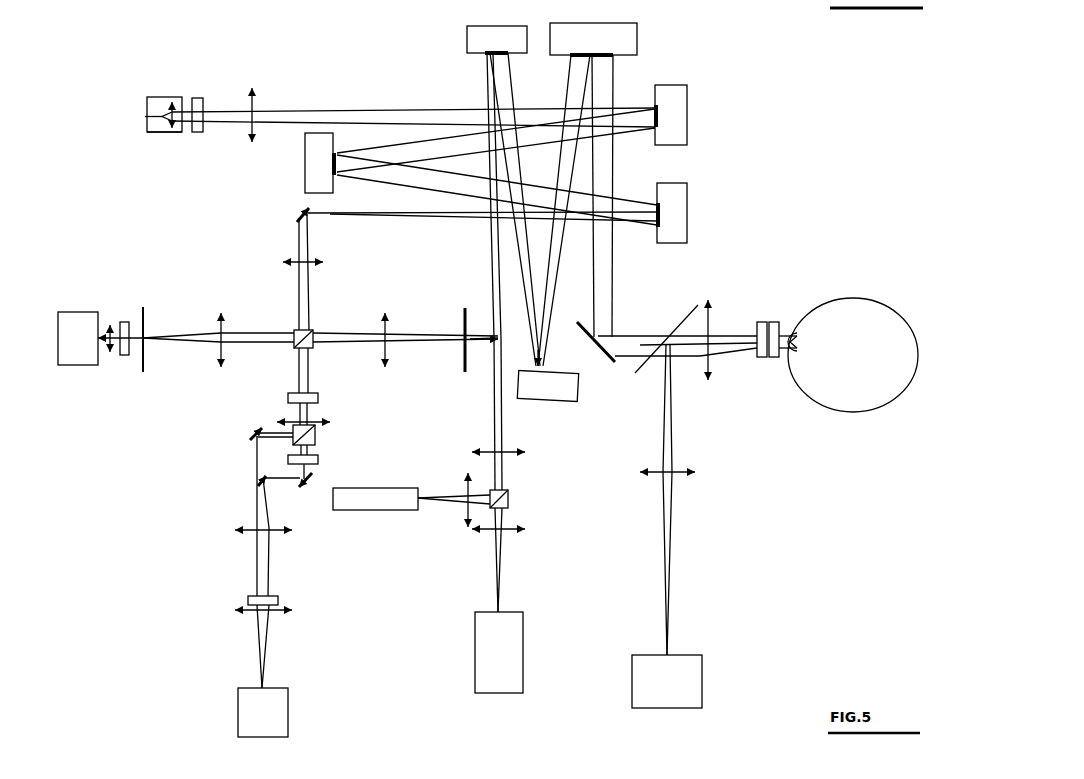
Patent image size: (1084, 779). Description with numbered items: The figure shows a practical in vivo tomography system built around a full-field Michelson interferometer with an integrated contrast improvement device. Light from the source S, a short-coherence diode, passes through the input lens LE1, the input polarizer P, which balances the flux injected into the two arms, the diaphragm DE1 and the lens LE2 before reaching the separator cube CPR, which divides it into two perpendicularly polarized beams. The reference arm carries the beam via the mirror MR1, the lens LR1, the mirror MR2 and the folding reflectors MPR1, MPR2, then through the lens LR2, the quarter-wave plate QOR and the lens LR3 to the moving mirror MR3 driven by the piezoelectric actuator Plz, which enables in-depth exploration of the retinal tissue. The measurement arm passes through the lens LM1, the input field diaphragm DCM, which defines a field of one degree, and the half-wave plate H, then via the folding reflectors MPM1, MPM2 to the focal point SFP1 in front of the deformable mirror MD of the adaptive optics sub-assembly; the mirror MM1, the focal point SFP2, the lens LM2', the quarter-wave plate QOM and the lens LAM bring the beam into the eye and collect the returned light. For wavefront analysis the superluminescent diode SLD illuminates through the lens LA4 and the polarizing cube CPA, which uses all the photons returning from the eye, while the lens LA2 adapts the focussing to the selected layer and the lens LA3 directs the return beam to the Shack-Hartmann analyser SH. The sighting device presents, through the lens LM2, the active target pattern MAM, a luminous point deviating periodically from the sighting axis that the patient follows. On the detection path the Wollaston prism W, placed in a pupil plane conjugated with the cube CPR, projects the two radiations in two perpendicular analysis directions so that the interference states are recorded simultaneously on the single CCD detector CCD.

The folding reflector of the measurement arm MPM1 is at (472, 39).
The folding reflector of the measurement arm MPM2 is at (618, 39).
The folding reflector of the reference arm MPR1 is at (696, 213).
The folding reflector of the reference arm MPR2 is at (695, 115).
The reference mirror MR1 is at (281, 210).
The reference mirror MR2 is at (299, 163).
The reference mirror MR3 is at (148, 125).
The piezoelectric actuator Plz is at (150, 126).
The reference arm lens LR1 is at (283, 263).
The reference arm lens LR2 is at (249, 104).
The reference arm lens LR3 is at (171, 128).
The quarter-wave plate of the reference arm QOR is at (198, 104).
The light source S is at (78, 338).
The input lens LE1 is at (113, 326).
The input polarizer P is at (124, 351).
The input diaphragm DE1 is at (146, 330).
The input lens LE2 is at (219, 330).
The polarizing separator cube CPR is at (321, 329).
The measurement arm lens LM1 is at (385, 350).
The input field diaphragm DCM is at (461, 328).
The half-wave plate H is at (484, 356).
The focal point SFP1 is at (520, 360).
The deformable mirror MD is at (547, 396).
The measurement arm mirror MM1 is at (590, 344).
The focal point SFP2 is at (666, 339).
The measurement arm lens LM2' is at (709, 331).
The eye-side lens LAM is at (778, 329).
The quarter-wave plate of the measurement arm QOM is at (757, 351).
The superluminescent diode SLD is at (375, 499).
The Wollaston prism W is at (277, 599).
The CCD detector CCD is at (263, 712).
The analysis path lens LA2 is at (515, 453).
The analysis path lens LA4 is at (468, 494).
The polarizing cube CPA is at (517, 497).
The analysis path lens LA3 is at (515, 531).
The Shack-Hartmann analyser SH is at (499, 652).
The sighting path lens LM2 is at (686, 473).
The active target pattern MAM is at (667, 681).